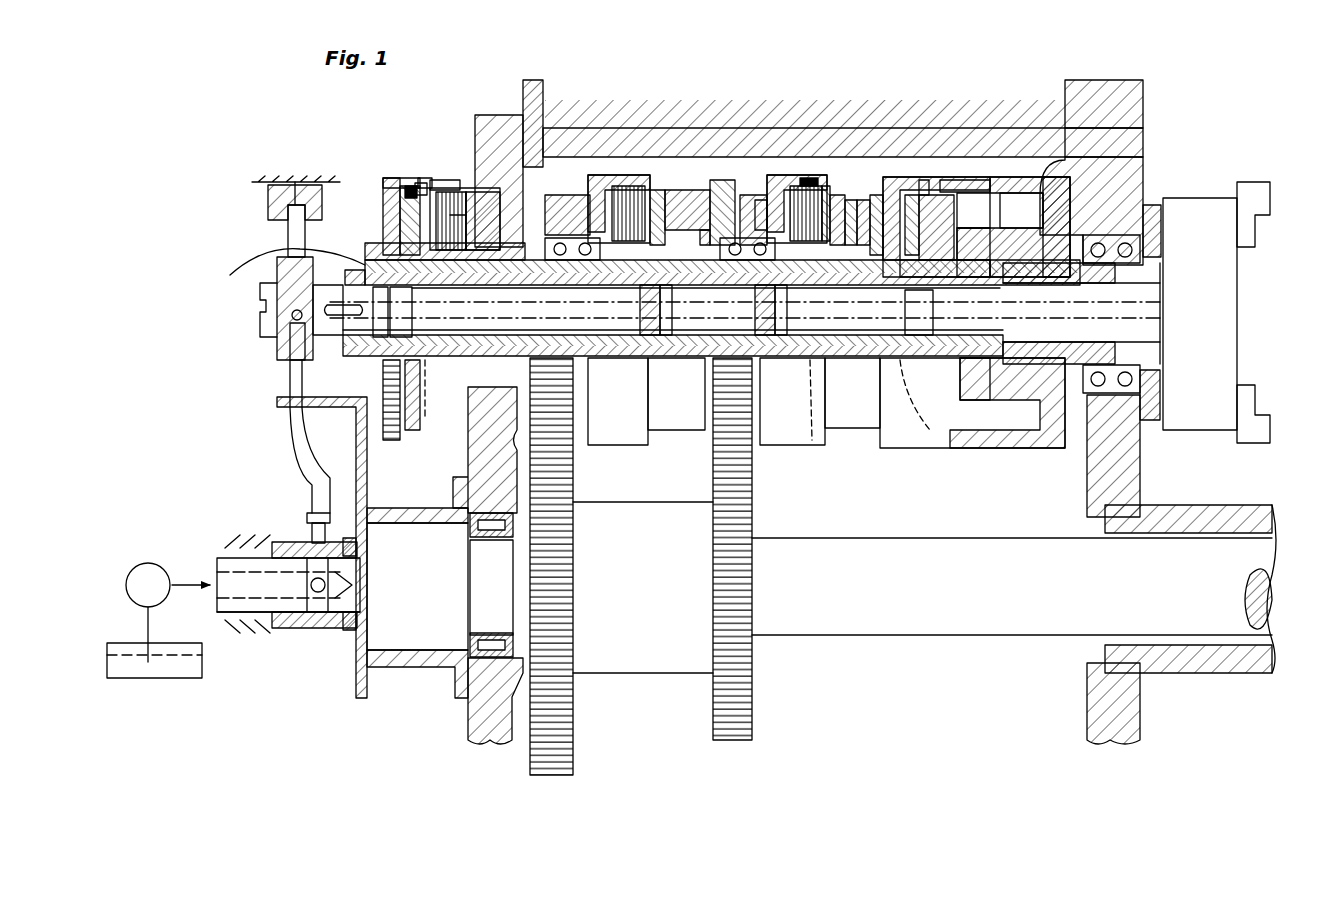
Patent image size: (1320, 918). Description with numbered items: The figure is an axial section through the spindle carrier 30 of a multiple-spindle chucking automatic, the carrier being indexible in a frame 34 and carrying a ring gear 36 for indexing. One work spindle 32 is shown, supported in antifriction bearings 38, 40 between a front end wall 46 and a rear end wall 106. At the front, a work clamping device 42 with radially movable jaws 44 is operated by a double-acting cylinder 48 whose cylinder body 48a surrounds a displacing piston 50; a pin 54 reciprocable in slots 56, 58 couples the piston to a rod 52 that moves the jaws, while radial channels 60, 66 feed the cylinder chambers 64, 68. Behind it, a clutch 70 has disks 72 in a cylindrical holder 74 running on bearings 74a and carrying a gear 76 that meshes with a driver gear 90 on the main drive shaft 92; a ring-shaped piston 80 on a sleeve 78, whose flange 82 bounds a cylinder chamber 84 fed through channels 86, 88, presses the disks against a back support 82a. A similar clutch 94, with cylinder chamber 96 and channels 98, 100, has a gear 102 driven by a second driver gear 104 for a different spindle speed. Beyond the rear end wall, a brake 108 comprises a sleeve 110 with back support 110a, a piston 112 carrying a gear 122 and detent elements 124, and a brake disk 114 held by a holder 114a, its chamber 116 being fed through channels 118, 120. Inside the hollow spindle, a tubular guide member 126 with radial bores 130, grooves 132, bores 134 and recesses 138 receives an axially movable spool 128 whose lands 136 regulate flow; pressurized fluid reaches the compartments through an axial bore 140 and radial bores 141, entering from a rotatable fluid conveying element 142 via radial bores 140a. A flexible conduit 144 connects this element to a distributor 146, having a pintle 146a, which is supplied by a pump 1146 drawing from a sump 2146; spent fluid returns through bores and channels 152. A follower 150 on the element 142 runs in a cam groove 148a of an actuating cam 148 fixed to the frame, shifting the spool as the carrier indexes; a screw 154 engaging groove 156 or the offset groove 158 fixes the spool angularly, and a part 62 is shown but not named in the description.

The spindle carrier 30 is at (1128, 145).
The work spindle 32 is at (1045, 365).
The housing or frame 34 is at (1130, 100).
The ring gear 36 is at (528, 112).
The antifriction bearing 38 is at (1125, 440).
The antifriction bearing 40 is at (495, 398).
The work clamping device 42 is at (1228, 298).
The jaws 44 is at (1250, 196).
The front end wall 46 is at (1100, 200).
The double-acting cylinder 48 is at (1057, 195).
The cylinder body 48a is at (1085, 125).
The displacing piston 50 is at (975, 200).
The reciprocable rod 52 is at (1100, 316).
The pin 54 is at (1000, 258).
The slot 56 is at (980, 360).
The slot 58 is at (1013, 227).
The radial channel 60 is at (935, 195).
The seal ring 62 is at (912, 200).
The cylinder chamber 64 is at (1025, 178).
The radial channel 66 is at (965, 182).
The cylinder chamber 68 is at (924, 182).
The clutch 70 is at (795, 195).
The disks 72 is at (826, 190).
The cylindrical holder 74 is at (775, 173).
The antifriction bearings 74a is at (705, 230).
The gear 76 is at (750, 195).
The sleeve 78 is at (760, 205).
The ring-shaped piston 80 is at (850, 205).
The flange 82 is at (890, 195).
The back support 82a is at (808, 178).
The cylinder chamber 84 is at (876, 195).
The radial channel 86 is at (862, 205).
The radial channel 88 is at (836, 200).
The driver gear 90 is at (752, 725).
The main drive shaft 92 is at (908, 640).
The clutch 94 is at (605, 173).
The cylinder chamber 96 is at (680, 195).
The radial channel 98 is at (655, 195).
The radial channel 100 is at (720, 185).
The gear 102 is at (568, 195).
The second driver gear 104 is at (573, 730).
The rear end wall 106 is at (497, 128).
The brake 108 is at (462, 180).
The sleeve 110 is at (385, 245).
The back support 110a is at (462, 212).
The ring-shaped piston 112 is at (420, 185).
The brake disk 114 is at (450, 188).
The ring-shaped holder 114a is at (470, 180).
The cylinder chamber 116 is at (411, 186).
The radial channel 118 is at (390, 225).
The radial channel 120 is at (440, 285).
The gear 122 is at (393, 180).
The detent elements 124 is at (421, 183).
The tubular guide member 126 is at (858, 360).
The spool 128 is at (612, 360).
The radial bores 130 is at (412, 290).
The axially parallel grooves 132 is at (662, 292).
The radial bores 134 is at (645, 290).
The lands 136 is at (385, 400).
The annular recesses 138 is at (800, 360).
The axial bore 140 is at (412, 440).
The radial bores 140a is at (292, 328).
The radial bores 141 is at (810, 420).
The fluid conveying element 142 is at (278, 267).
The flexible conduit 144 is at (297, 445).
The distributor 146 is at (290, 545).
The pintle 146a is at (258, 614).
The actuating cam 148 is at (270, 200).
The cam groove 148a is at (292, 182).
The follower 150 is at (296, 235).
The bores and channels 152 is at (545, 288).
The screw 154 is at (290, 265).
The peripheral groove 156 is at (290, 320).
The second peripheral groove 158 is at (340, 318).
The pump 1146 is at (160, 570).
The sump 2146 is at (170, 680).